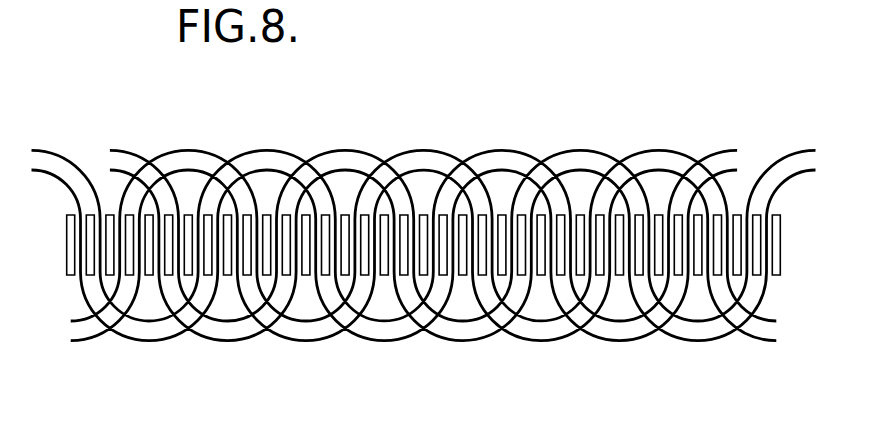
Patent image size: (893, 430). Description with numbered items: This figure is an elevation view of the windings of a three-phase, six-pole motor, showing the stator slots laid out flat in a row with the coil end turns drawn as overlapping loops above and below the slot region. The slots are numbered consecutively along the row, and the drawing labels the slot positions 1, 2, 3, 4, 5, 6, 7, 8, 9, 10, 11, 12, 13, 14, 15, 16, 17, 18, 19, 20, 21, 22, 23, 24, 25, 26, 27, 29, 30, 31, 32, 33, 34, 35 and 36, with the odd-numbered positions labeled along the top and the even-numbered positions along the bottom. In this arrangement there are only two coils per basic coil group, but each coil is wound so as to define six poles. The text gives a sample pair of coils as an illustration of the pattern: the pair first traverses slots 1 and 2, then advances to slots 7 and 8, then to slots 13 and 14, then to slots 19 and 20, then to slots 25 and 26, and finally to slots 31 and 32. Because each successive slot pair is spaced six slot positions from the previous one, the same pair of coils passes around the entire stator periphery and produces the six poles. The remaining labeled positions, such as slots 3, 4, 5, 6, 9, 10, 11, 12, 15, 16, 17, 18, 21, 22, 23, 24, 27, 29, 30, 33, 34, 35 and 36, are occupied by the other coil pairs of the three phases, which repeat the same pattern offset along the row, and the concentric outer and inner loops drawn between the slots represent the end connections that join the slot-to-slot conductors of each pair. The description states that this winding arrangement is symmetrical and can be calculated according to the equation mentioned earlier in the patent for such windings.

The slot 1 is at (239, 214).
The slot 2 is at (258, 277).
The coil side 3 is at (278, 214).
The coil side 4 is at (355, 294).
The coil side 5 is at (318, 214).
The coil side 6 is at (336, 277).
The slot 7 is at (357, 214).
The slot 8 is at (376, 277).
The coil side 9 is at (396, 214).
The coil side 10 is at (415, 277).
The coil side 11 is at (435, 214).
The coil side 12 is at (454, 277).
The slot 13 is at (474, 214).
The slot 14 is at (493, 277).
The coil side 15 is at (514, 214).
The coil side 16 is at (532, 277).
The coil side 17 is at (553, 214).
The coil side 18 is at (572, 277).
The slot 19 is at (592, 214).
The slot 20 is at (611, 277).
The coil side 21 is at (631, 214).
The coil side 22 is at (650, 277).
The coil side 23 is at (670, 214).
The coil side 24 is at (689, 277).
The slot 25 is at (710, 214).
The slot 26 is at (728, 277).
The coil side 27 is at (749, 214).
The coil side 29 is at (82, 214).
The coil side 30 is at (101, 277).
The slot 31 is at (122, 214).
The slot 32 is at (140, 277).
The coil side 33 is at (161, 214).
The coil side 34 is at (180, 277).
The coil side 35 is at (200, 214).
The coil side 36 is at (219, 277).